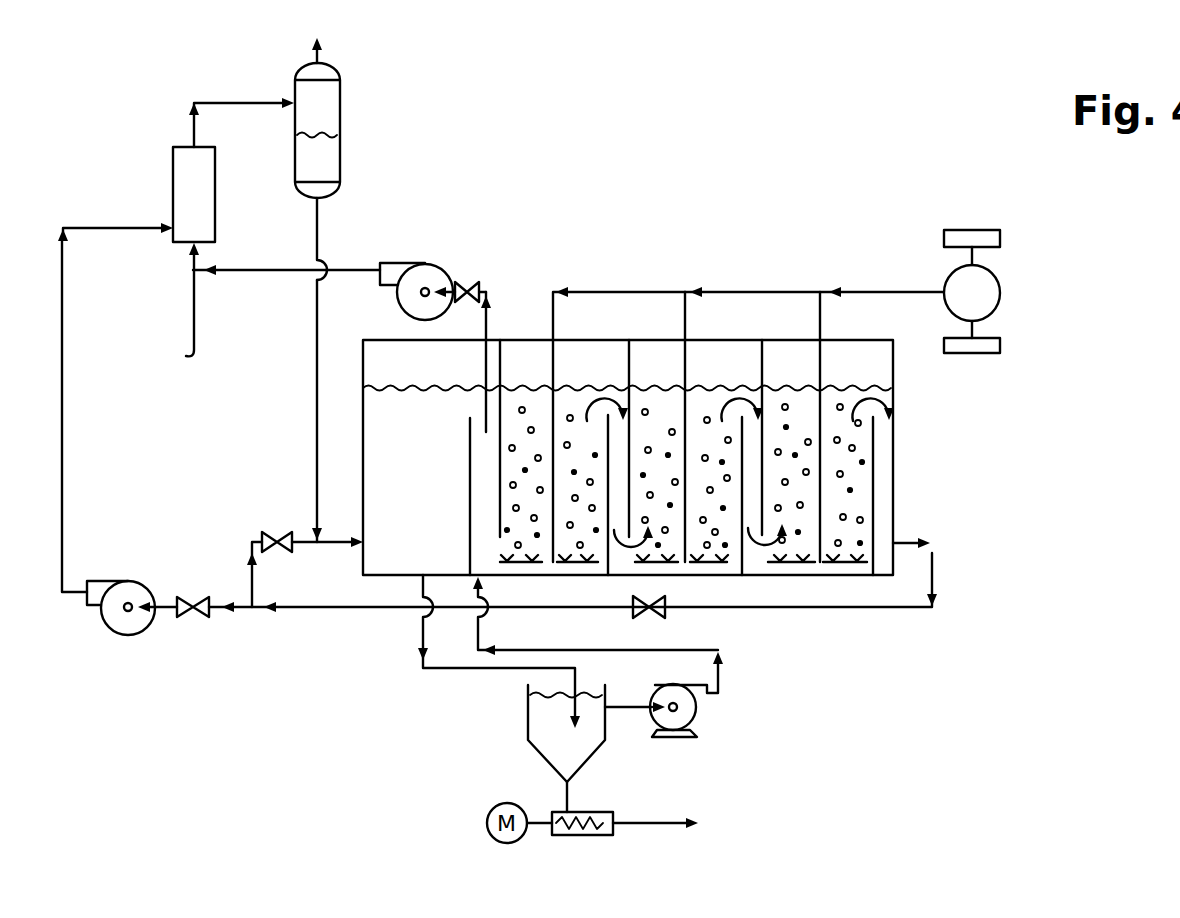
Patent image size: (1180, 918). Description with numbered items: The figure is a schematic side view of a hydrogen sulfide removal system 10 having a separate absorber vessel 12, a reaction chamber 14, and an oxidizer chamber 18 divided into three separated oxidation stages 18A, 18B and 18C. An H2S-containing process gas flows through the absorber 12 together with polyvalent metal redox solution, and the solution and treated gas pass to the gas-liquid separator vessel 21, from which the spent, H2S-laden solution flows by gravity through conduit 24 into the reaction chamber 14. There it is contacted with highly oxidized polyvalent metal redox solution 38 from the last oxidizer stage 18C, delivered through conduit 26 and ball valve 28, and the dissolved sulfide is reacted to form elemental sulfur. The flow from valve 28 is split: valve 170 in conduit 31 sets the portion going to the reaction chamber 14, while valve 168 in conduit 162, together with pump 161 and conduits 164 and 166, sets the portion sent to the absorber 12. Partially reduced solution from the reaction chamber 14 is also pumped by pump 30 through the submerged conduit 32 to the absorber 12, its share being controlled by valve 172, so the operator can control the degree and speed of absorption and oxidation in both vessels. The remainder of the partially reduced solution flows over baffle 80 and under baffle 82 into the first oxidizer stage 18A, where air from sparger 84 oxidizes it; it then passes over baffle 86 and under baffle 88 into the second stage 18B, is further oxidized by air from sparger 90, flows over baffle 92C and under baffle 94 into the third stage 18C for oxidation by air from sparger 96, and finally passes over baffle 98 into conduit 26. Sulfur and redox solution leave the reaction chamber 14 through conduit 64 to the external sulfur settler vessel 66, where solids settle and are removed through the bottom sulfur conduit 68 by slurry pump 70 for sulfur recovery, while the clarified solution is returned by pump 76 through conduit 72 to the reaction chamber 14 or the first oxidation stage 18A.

The wastewater treatment system 10 is at (811, 252).
The absorber vessel 12 is at (176, 172).
The reaction chamber 14 is at (363, 410).
The oxidizer chamber 18 is at (685, 284).
The first oxidation stage 18A is at (533, 352).
The second oxidation stage 18B is at (665, 345).
The third oxidation stage 18C is at (803, 355).
The gas-liquid separator vessel 21 is at (340, 105).
The conduit 24 is at (319, 231).
The conduit 26 is at (365, 612).
The ball valve 28 is at (657, 617).
The pump 30 is at (424, 264).
The conduit 31 is at (292, 548).
The submerged conduit 32 is at (488, 328).
The highly oxidized polyvalent metal redox solution 38 is at (860, 436).
The conduit 64 is at (420, 636).
The sulfur settler vessel 66 is at (528, 715).
The bottom sulfur conduit 68 is at (560, 793).
The slurry pump 70 is at (607, 835).
The conduit 72 is at (633, 708).
The pump 76 is at (690, 718).
The baffle 80 is at (468, 443).
The baffle 82 is at (500, 350).
The sparger 84 is at (557, 575).
The baffle 86 is at (608, 430).
The baffle 88 is at (630, 352).
The sparger 90 is at (692, 575).
The baffle 92C is at (742, 433).
The baffle 94 is at (760, 355).
The sparger 96 is at (825, 575).
The baffle 98 is at (875, 475).
The pump 161 is at (112, 588).
The conduit 162 is at (160, 608).
The conduit 164 is at (63, 413).
The conduit 166 is at (122, 228).
The valve 168 is at (195, 618).
The valve 170 is at (272, 533).
The valve 172 is at (470, 290).